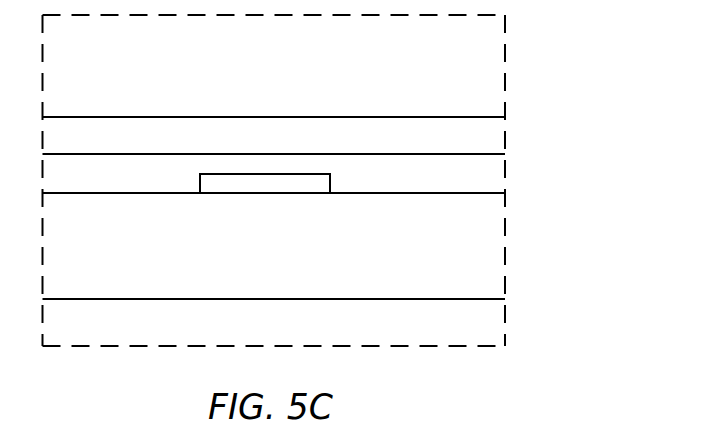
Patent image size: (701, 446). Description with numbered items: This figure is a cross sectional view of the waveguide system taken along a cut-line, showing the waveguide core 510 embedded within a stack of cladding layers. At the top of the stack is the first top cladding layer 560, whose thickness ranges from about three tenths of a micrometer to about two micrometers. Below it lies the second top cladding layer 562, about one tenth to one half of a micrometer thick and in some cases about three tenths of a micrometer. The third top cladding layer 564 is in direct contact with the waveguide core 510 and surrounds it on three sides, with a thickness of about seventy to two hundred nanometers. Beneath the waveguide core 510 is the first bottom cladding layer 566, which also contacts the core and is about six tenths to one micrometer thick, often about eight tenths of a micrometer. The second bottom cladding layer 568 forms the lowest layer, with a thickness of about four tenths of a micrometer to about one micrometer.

The waveguide core 510 is at (313, 186).
The first top cladding layer 560 is at (489, 71).
The second top cladding layer 562 is at (493, 147).
The third top cladding layer 564 is at (493, 183).
The first bottom cladding layer 566 is at (493, 245).
The second bottom cladding layer 568 is at (495, 325).